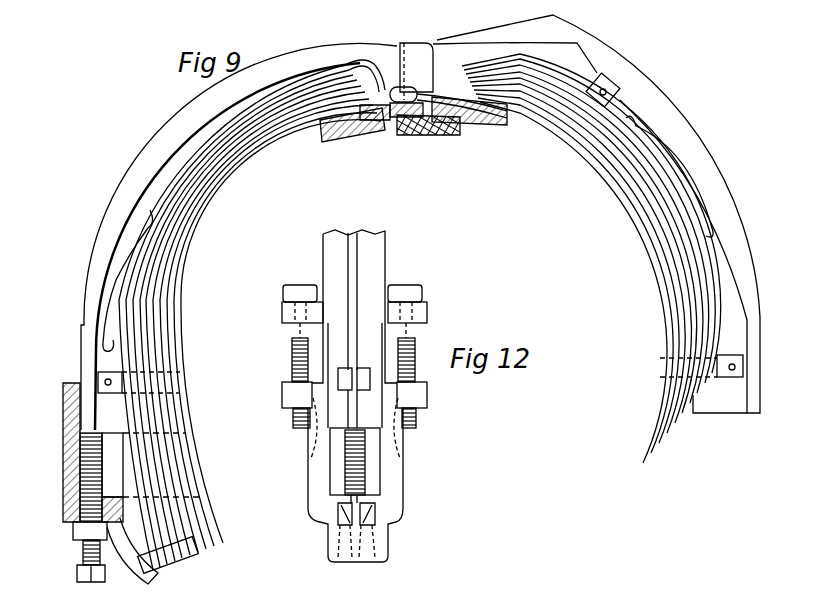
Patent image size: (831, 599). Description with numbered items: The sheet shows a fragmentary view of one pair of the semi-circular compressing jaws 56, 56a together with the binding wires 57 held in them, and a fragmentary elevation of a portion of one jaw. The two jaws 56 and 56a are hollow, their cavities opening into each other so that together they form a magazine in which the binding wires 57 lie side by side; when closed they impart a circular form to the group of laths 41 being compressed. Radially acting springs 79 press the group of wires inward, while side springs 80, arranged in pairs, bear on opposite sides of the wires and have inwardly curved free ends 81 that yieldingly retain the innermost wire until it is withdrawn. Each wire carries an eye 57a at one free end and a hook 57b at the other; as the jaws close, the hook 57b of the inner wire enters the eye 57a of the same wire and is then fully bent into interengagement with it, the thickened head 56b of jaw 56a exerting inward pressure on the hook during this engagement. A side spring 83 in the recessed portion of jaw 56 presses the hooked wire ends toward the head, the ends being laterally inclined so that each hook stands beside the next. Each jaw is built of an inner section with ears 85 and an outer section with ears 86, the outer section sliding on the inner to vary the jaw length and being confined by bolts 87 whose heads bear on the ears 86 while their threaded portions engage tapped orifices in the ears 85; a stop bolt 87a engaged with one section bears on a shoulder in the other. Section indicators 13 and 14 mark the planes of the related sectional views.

In FIG. 9, the compressing jaw 56 is at (172, 147).
In FIG. 12, the compressing jaw 56 is at (373, 267).
In FIG. 9, the compressing jaw 56a is at (683, 135).
In FIG. 9, the thickened head 56b is at (413, 72).
In FIG. 9, the binding wire 57 is at (217, 172).
In FIG. 9, the eye 57a is at (500, 84).
In FIG. 9, the hook 57b is at (372, 84).
In FIG. 9, the radially acting spring 79 is at (125, 268).
In FIG. 9, the side spring 80 is at (105, 378).
In FIG. 9, the side spring 83 is at (315, 110).
In FIG. 9, the group of laths 41 is at (457, 134).
In FIG. 9, the stop bolt 87a is at (98, 475).
In FIG. 12, the stop bolt 87a is at (360, 463).
In FIG. 9, the section line 13 is at (222, 510).
In FIG. 9, the section line 14 is at (367, 57).
In FIG. 12, the ears 86 is at (420, 307).
In FIG. 12, the bolt 87 is at (405, 353).
In FIG. 12, the ears 85 is at (422, 397).
In FIG. 12, the inwardly curved free end 81 is at (348, 370).